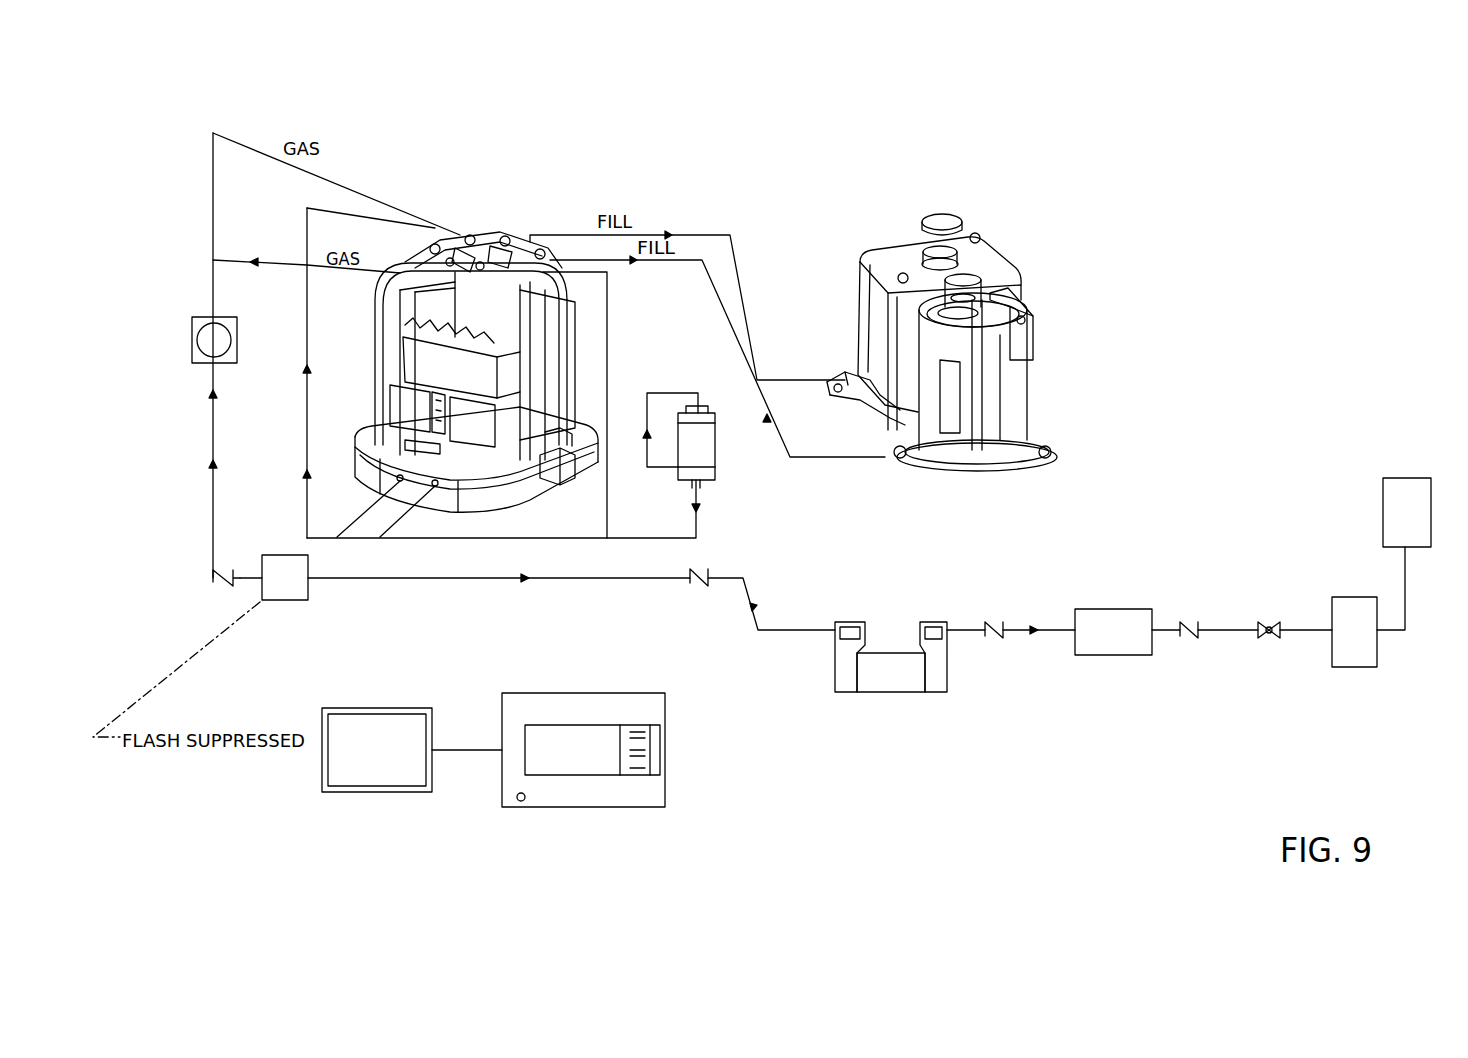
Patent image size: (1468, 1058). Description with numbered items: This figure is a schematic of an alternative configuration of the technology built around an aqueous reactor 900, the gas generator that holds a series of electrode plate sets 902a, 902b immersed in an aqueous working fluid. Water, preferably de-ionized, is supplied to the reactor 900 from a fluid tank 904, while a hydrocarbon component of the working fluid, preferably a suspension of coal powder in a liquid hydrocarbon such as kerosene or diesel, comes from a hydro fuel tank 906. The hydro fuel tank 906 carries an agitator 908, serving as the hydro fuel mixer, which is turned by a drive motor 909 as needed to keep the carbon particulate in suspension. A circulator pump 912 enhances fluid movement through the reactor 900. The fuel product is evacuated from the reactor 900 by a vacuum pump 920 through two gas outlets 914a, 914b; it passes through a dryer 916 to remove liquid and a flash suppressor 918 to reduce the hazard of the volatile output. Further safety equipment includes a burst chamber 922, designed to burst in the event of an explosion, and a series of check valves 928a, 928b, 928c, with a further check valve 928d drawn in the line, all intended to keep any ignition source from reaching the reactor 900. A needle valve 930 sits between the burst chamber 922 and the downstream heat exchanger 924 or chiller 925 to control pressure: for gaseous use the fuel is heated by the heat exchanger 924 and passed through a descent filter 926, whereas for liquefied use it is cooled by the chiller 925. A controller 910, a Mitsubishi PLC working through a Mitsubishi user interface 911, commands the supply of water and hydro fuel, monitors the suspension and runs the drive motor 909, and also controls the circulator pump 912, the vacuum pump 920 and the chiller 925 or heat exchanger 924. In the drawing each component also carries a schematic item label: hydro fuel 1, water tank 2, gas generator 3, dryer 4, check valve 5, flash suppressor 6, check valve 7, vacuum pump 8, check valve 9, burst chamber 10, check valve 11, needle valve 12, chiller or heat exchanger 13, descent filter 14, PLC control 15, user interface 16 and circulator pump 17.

The hydra fuel 1 is at (1000, 382).
The water tank 2 is at (967, 314).
The act gas generator 3 is at (410, 384).
The dryer 4 is at (181, 328).
The check valve 5 is at (232, 584).
The valve box 6 is at (328, 610).
The check valve 7 is at (702, 588).
The vacuum pump 8 is at (894, 673).
The check valve 9 is at (989, 644).
The burst chamber 10 is at (1109, 655).
The check valve 11 is at (1194, 641).
The needle valve 12 is at (1269, 635).
The chiller or heat exchanger 13 is at (1377, 655).
The descent filter 14 is at (1408, 491).
The PLC control 15 is at (698, 847).
The user interface 16 is at (392, 726).
The circulator pump 17 is at (751, 464).
The aqueous reactor 900 is at (526, 305).
The electrode plate set 902a is at (360, 371).
The electrode plate set 902b is at (526, 305).
The fluid tank 904 is at (1038, 303).
The hydro fuel tank 906 is at (1013, 340).
The agitator 908 is at (1072, 382).
The drive motor 909 is at (980, 293).
The controller 910 is at (627, 767).
The user interface 911 is at (392, 770).
The circulator pump 912 is at (726, 435).
The gas outlet 914a is at (410, 305).
The gas outlet 914b is at (410, 305).
The dryer 916 is at (173, 384).
The flash suppressor 918 is at (321, 597).
The vacuum pump 920 is at (901, 617).
The burst chamber 922 is at (1086, 613).
The heat exchanger 924 is at (1361, 603).
The chiller 925 is at (1377, 612).
The descent filter 926 is at (1372, 471).
The check valve 928a is at (184, 590).
The check valve 928b is at (771, 576).
The check valve 928c is at (1038, 700).
The check valve 928d is at (1153, 577).
The needle valve 930 is at (1248, 592).